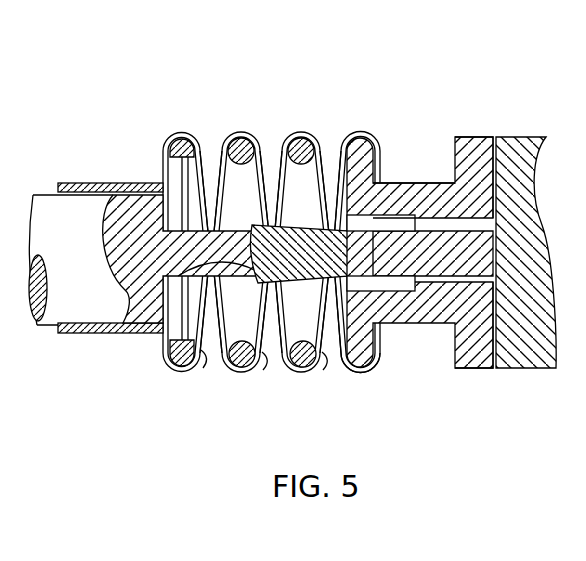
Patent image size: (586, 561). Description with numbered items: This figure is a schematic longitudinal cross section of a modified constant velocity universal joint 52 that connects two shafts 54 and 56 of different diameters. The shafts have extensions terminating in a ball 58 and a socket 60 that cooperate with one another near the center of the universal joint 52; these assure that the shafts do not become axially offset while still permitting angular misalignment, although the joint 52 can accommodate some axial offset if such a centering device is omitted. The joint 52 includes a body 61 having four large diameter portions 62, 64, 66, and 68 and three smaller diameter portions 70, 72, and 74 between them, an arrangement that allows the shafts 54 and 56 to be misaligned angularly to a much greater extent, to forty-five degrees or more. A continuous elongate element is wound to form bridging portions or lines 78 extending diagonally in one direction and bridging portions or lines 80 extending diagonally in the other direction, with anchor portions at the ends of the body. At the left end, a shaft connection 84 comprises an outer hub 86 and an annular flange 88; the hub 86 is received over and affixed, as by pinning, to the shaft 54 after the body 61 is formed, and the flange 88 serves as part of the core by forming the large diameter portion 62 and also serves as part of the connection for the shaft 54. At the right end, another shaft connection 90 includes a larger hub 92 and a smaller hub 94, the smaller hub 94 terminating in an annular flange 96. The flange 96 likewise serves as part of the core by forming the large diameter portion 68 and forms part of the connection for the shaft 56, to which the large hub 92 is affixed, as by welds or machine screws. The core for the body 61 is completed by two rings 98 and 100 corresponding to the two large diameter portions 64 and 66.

The universal joint 52 is at (177, 107).
The shaft 54 is at (40, 195).
The shaft 56 is at (517, 137).
The ball 58 is at (272, 165).
The socket 60 is at (128, 300).
The body 61 is at (248, 127).
The large diameter portion 62 is at (176, 133).
The large diameter portion 64 is at (243, 131).
The large diameter portion 66 is at (300, 131).
The large diameter portion 68 is at (358, 131).
The smaller diameter portion 70 is at (208, 278).
The smaller diameter portion 72 is at (266, 280).
The smaller diameter portion 74 is at (330, 280).
The bridging portions 78 is at (253, 378).
The bridging portions 80 is at (213, 160).
The shaft connection 84 is at (133, 183).
The outer hub 86 is at (90, 333).
The annular flange 88 is at (173, 369).
The shaft connection 90 is at (432, 264).
The larger hub 92 is at (468, 137).
The smaller hub 94 is at (407, 183).
The annular flange 96 is at (366, 369).
The ring 98 is at (242, 373).
The ring 100 is at (287, 284).